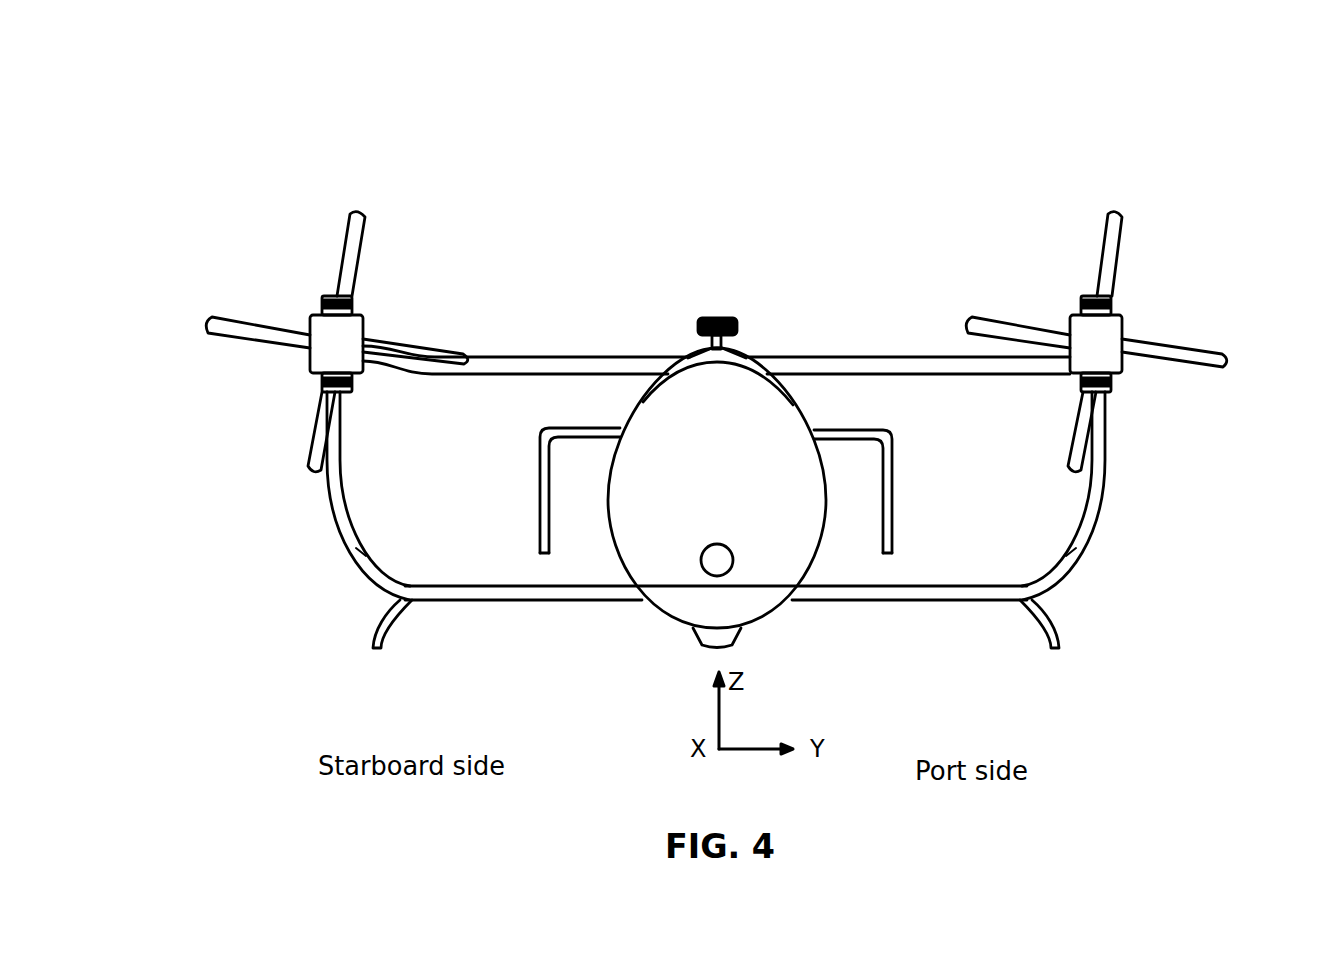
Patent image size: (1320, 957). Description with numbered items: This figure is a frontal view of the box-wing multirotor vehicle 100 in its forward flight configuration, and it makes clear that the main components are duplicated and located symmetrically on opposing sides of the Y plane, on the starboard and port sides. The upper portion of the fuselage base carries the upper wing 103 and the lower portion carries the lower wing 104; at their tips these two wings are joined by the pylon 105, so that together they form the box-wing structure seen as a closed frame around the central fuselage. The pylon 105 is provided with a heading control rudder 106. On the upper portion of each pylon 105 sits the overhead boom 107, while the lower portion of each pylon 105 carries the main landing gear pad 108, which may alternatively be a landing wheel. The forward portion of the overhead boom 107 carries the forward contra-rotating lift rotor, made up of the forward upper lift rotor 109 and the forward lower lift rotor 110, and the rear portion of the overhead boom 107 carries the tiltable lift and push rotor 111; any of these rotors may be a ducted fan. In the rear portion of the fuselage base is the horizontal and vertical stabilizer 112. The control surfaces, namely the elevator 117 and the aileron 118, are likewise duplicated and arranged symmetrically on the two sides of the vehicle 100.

The box-wing multirotor vehicle 100 is at (717, 164).
The upper wing 103 is at (716, 318).
The elevator 117 is at (542, 356).
The lower wing 104 is at (716, 641).
The aileron 118 is at (510, 604).
The pylon 105 is at (703, 496).
The heading control rudder 106 is at (325, 493).
The overhead boom 107 is at (383, 310).
The main landing gear pad 108 is at (370, 628).
The forward upper lift rotor 109 is at (322, 297).
The forward lower lift rotor 110 is at (325, 388).
The tiltable lift and push rotor 111 is at (362, 218).
The horizontal and vertical stabilizer 112 is at (540, 435).